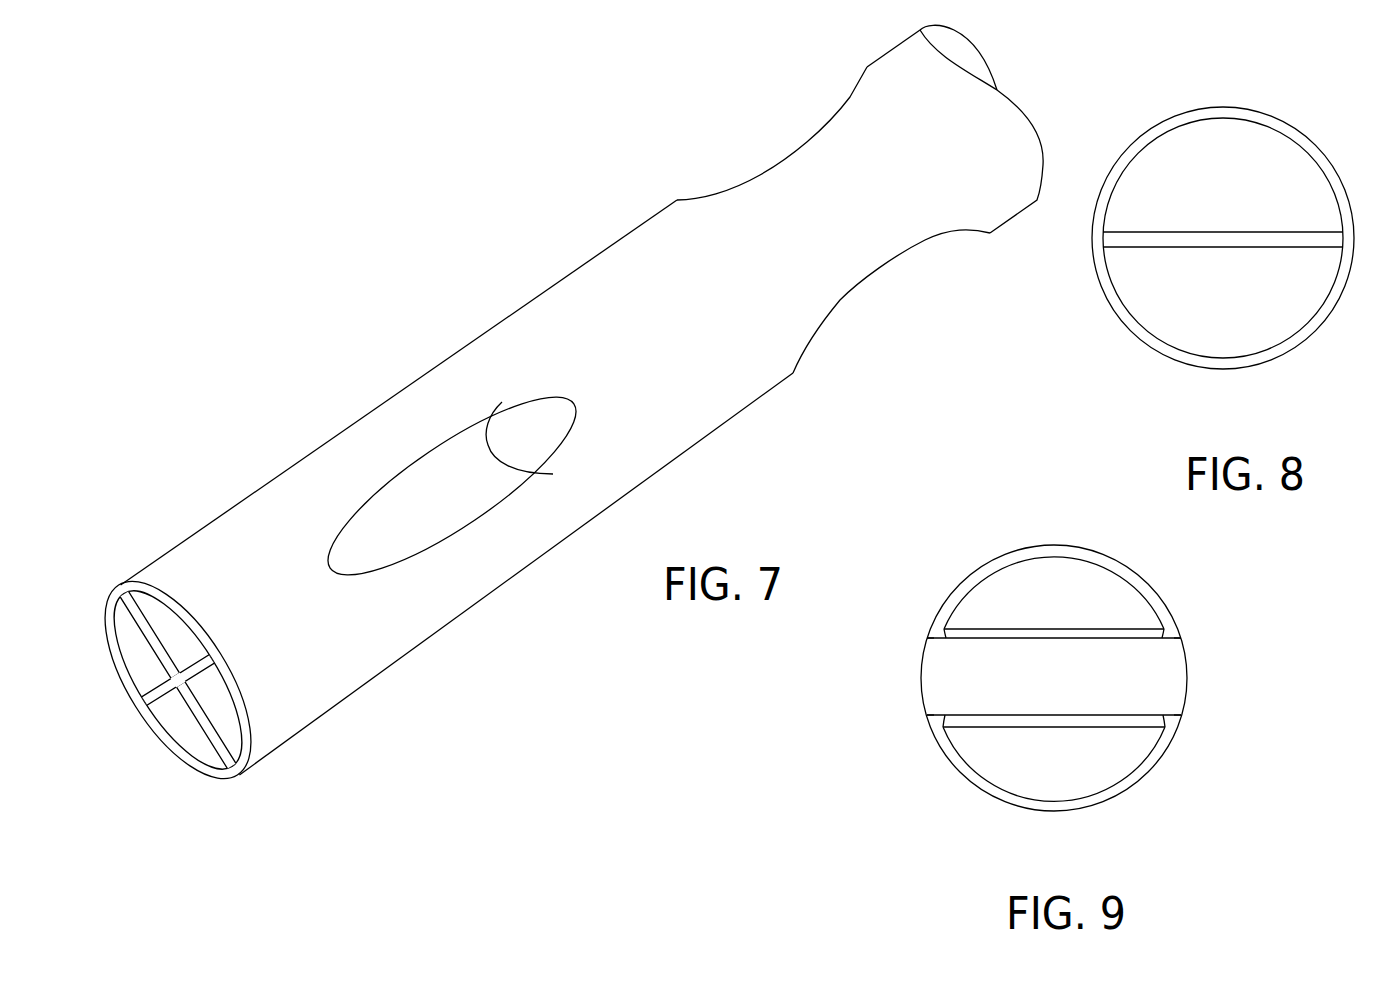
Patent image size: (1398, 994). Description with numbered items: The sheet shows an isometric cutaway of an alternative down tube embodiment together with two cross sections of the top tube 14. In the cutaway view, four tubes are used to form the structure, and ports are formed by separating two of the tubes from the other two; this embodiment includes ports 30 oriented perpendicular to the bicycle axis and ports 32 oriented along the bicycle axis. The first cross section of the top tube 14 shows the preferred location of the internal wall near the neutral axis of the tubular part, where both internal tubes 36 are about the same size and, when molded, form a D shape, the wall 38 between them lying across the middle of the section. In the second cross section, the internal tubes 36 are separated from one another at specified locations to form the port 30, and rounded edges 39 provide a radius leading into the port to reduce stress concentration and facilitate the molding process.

In FIG. 7, the top tube 14 is at (559, 413).
In FIG. 8, the top tube 14 is at (1322, 148).
In FIG. 9, the top tube 14 is at (1182, 650).
In FIG. 7, the port 30 is at (503, 505).
In FIG. 9, the port 30 is at (1166, 676).
In FIG. 7, the port 32 is at (817, 320).
In FIG. 8, the internal tube 36 is at (1243, 108).
In FIG. 9, the internal tube 36 is at (1087, 552).
In FIG. 8, the divider web 38 is at (1260, 237).
In FIG. 9, the rounded edge 39 is at (932, 638).